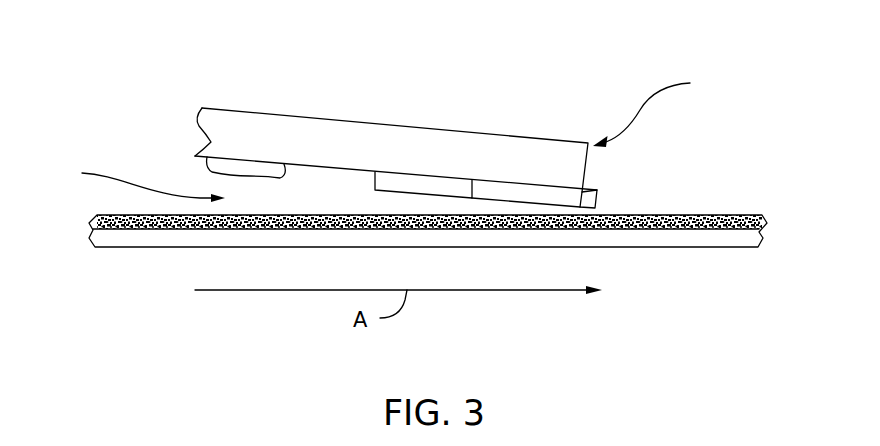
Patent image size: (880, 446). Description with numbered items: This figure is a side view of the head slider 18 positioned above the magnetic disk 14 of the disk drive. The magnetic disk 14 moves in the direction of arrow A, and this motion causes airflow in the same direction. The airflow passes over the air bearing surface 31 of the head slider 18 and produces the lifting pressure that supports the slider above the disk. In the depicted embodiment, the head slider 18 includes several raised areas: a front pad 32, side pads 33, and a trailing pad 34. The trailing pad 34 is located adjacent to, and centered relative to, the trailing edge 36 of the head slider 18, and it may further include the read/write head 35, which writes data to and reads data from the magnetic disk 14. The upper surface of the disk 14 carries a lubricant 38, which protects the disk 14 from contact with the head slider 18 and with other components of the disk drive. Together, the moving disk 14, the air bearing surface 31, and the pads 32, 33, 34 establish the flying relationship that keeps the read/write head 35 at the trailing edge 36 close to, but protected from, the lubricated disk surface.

The magnetic disk 14 is at (177, 238).
The head slider 18 is at (312, 128).
The air bearing surface 31 is at (136, 181).
The front pad 32 is at (222, 167).
The side pads 33 is at (392, 186).
The trailing pad 34 is at (522, 197).
The read/write head 35 is at (593, 193).
The trailing edge 36 is at (660, 110).
The lubricant 38 is at (717, 223).